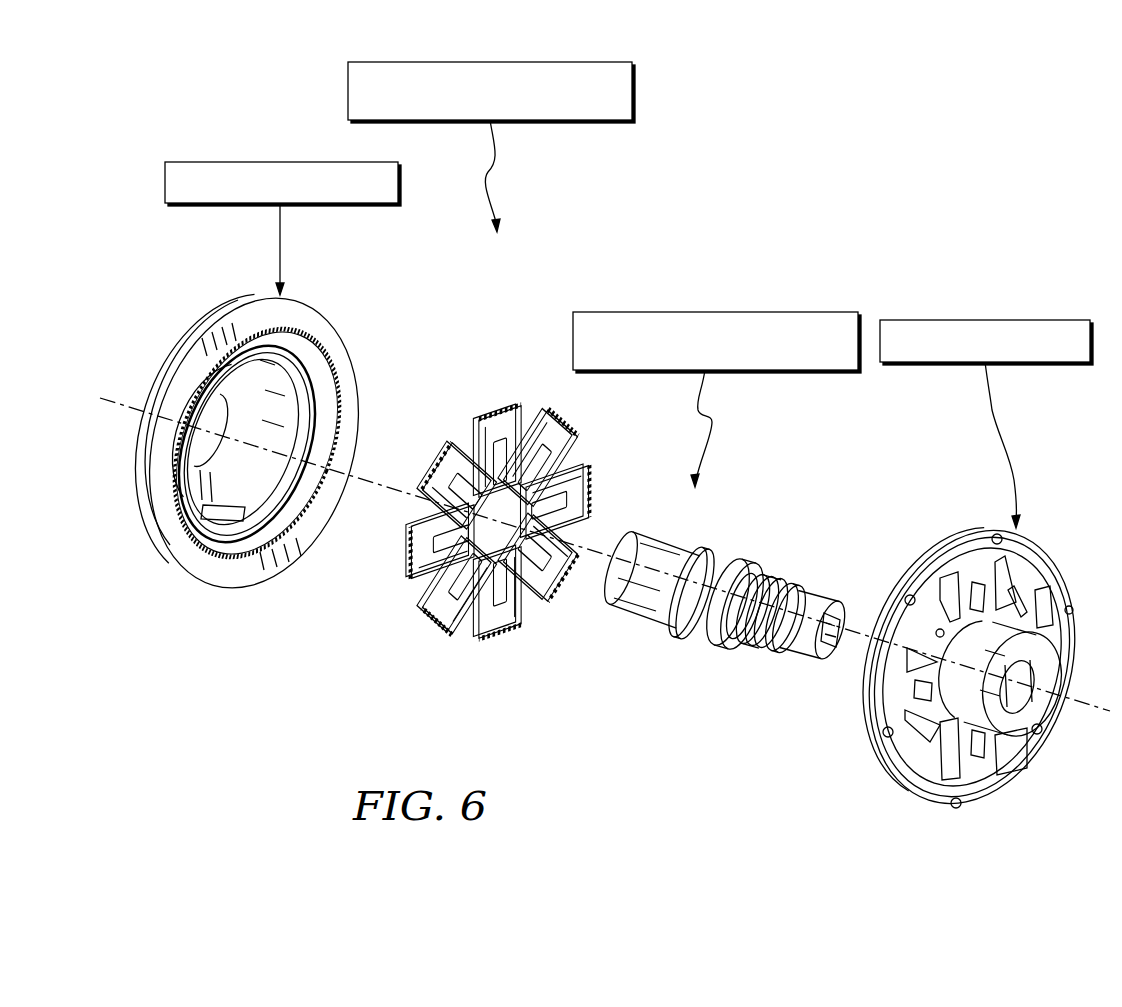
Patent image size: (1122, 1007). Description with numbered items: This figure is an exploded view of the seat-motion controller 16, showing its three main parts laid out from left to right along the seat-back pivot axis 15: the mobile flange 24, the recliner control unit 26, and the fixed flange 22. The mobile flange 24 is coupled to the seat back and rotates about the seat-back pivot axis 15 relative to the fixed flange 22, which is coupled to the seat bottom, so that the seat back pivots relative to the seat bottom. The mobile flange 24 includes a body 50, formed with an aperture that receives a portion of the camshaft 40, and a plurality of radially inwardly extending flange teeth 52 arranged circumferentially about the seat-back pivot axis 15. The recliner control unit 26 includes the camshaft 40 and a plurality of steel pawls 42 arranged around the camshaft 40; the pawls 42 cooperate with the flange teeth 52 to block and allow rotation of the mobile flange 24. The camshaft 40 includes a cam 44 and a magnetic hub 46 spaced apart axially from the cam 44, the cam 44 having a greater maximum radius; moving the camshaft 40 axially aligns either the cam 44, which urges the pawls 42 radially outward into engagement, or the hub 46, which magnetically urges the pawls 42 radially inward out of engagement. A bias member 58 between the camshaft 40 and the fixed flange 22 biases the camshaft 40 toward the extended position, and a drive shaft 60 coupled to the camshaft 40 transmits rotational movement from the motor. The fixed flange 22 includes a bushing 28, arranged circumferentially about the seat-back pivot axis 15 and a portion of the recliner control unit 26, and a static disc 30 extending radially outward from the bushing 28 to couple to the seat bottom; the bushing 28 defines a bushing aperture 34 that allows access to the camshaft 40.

The seat-back pivot axis 15 is at (390, 488).
The seat-motion controller 16 is at (407, 60).
The fixed flange 22 is at (937, 320).
The mobile flange 24 is at (220, 162).
The recliner control unit 26 is at (630, 312).
The bushing 28 is at (966, 682).
The static disc 30 is at (1042, 573).
The bushing aperture 34 is at (1016, 690).
The camshaft 40 is at (724, 612).
The pawls 42 is at (456, 441).
The cam 44 is at (708, 654).
The magnetic hub 46 is at (665, 627).
The body 50 is at (197, 564).
The flange teeth 52 is at (336, 376).
The bias member 58 is at (773, 580).
The drive shaft 60 is at (792, 648).